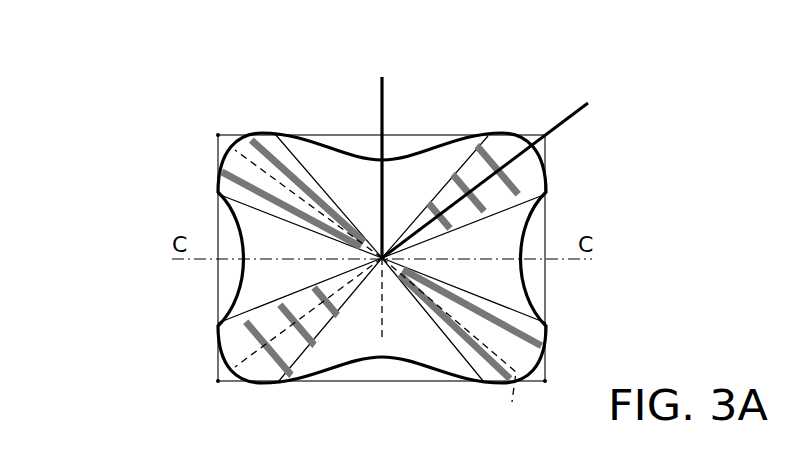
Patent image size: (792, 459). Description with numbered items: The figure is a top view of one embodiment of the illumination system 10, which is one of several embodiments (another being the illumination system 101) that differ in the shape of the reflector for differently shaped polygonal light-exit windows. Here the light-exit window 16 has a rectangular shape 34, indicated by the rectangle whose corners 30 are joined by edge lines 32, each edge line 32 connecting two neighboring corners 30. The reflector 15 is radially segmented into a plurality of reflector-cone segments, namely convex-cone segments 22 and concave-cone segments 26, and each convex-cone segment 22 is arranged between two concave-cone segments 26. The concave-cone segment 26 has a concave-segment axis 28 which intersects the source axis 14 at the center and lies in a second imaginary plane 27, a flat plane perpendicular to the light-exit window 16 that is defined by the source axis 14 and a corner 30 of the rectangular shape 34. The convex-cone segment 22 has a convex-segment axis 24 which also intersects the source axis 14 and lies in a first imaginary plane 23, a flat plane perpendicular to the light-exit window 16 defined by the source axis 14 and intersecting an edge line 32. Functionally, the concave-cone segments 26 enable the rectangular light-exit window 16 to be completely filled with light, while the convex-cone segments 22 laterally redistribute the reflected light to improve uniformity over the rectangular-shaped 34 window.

The illumination system 10 is at (501, 82).
The source axis 14 is at (385, 246).
The reflector 15 is at (545, 186).
The light-exit window 16 is at (402, 145).
The convex-cone segment 22 is at (417, 348).
The first imaginary plane 23 is at (379, 84).
The convex-segment axis 24 is at (382, 322).
The concave-cone segment 26 is at (530, 338).
The second imaginary plane 27 is at (560, 122).
The concave-segment axis 28 is at (454, 345).
The corner 30 is at (218, 133).
The edge line 32 is at (320, 134).
The rectangular shape 34 is at (203, 162).
The illumination system 101 is at (565, 453).